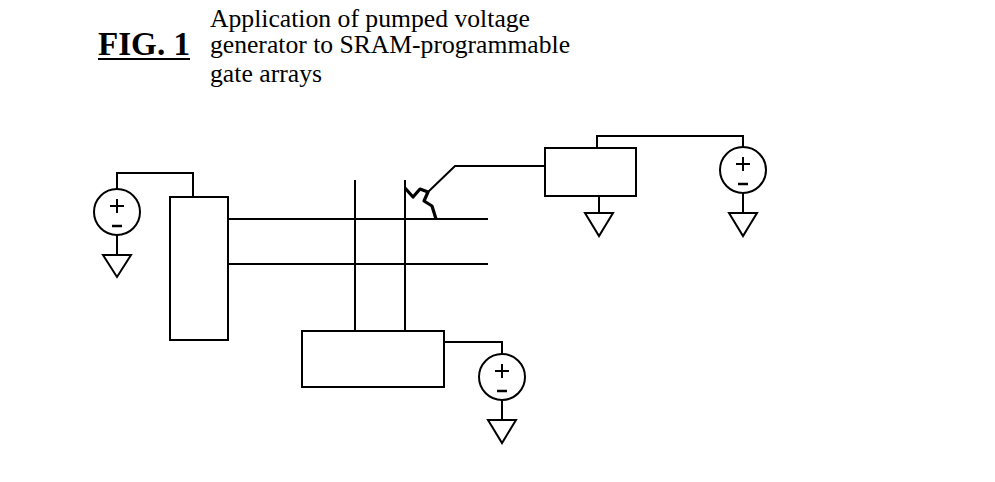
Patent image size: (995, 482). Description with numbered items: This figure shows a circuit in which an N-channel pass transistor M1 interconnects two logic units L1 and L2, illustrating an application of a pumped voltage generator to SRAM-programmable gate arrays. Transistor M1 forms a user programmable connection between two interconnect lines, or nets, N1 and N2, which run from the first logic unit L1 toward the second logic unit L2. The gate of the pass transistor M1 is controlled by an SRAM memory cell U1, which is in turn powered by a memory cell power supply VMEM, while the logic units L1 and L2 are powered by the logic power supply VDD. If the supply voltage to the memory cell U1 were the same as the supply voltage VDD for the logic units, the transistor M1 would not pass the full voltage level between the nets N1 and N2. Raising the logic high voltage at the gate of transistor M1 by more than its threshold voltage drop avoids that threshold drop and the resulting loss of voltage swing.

The logic unit L1 is at (213, 190).
The logic unit L2 is at (319, 328).
The N-channel pass transistor M1 is at (433, 192).
The interconnect line (net) N1 is at (374, 218).
The interconnect line (net) N2 is at (406, 237).
The SRAM memory cell U1 is at (644, 186).
The power supply voltage VDD is at (104, 225).
The memory cell power supply VMEM is at (786, 191).